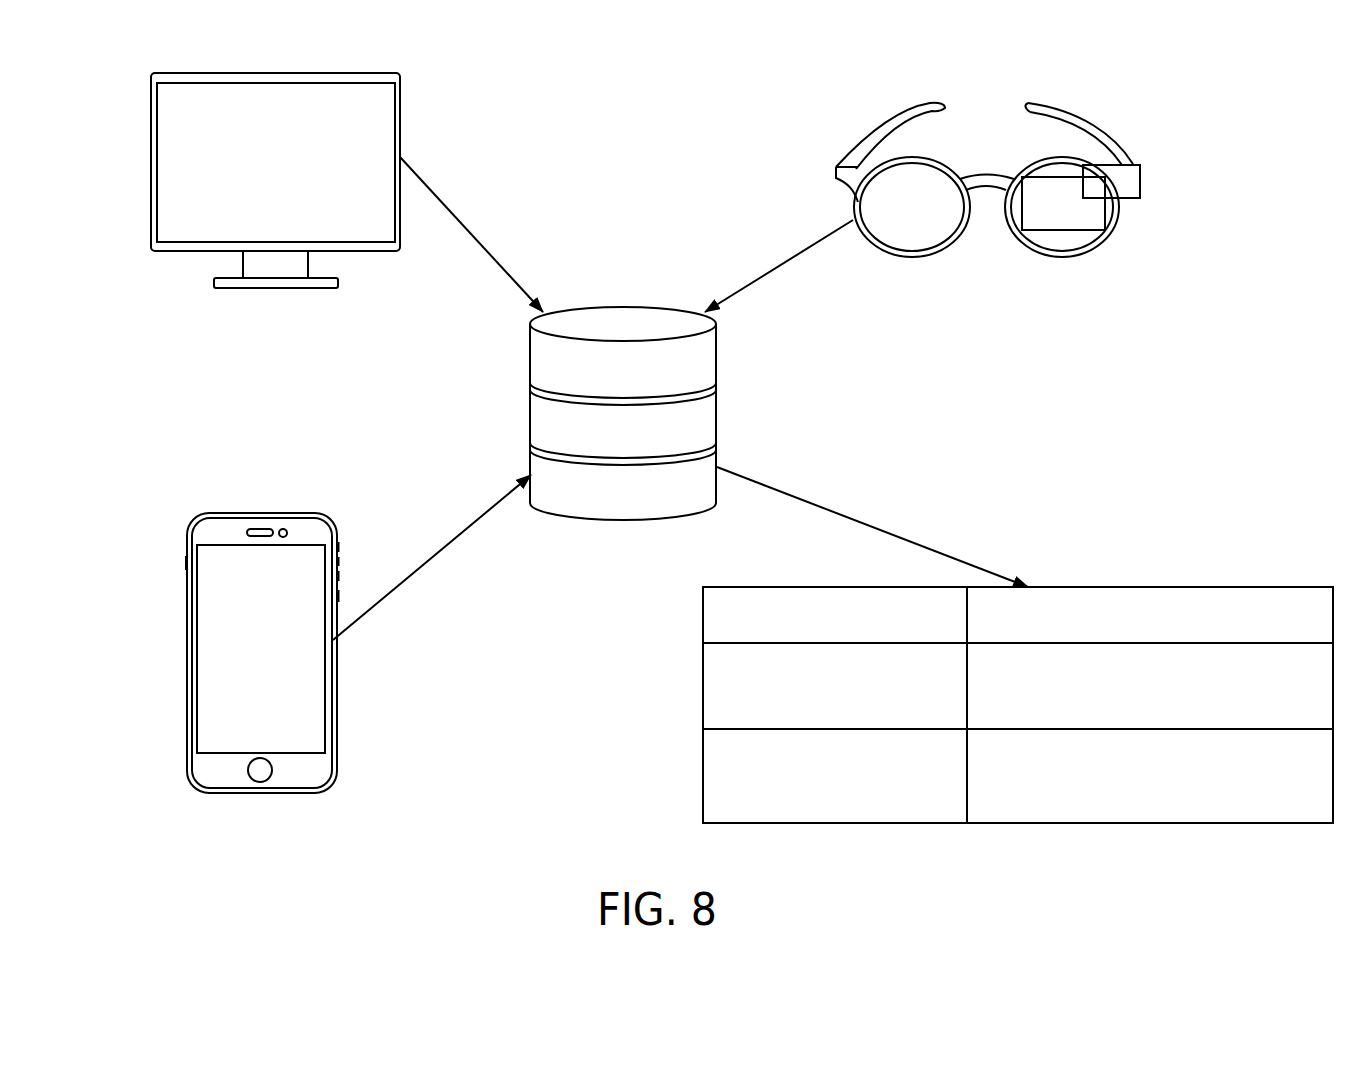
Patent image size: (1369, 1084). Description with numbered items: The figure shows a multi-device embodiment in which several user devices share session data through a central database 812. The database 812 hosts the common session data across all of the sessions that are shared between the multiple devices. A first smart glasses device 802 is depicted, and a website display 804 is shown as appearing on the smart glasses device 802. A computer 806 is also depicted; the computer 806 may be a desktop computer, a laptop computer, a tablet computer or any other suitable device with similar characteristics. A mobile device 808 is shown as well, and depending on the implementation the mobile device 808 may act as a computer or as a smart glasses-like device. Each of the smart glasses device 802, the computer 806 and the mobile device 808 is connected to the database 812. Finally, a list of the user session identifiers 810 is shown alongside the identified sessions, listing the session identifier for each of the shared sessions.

The smart glasses device 802 is at (976, 177).
The website display 804 is at (1102, 207).
The computer 806 is at (152, 157).
The mobile device 808 is at (187, 668).
The list of user session identifiers 810 is at (1188, 587).
The database 812 is at (613, 305).